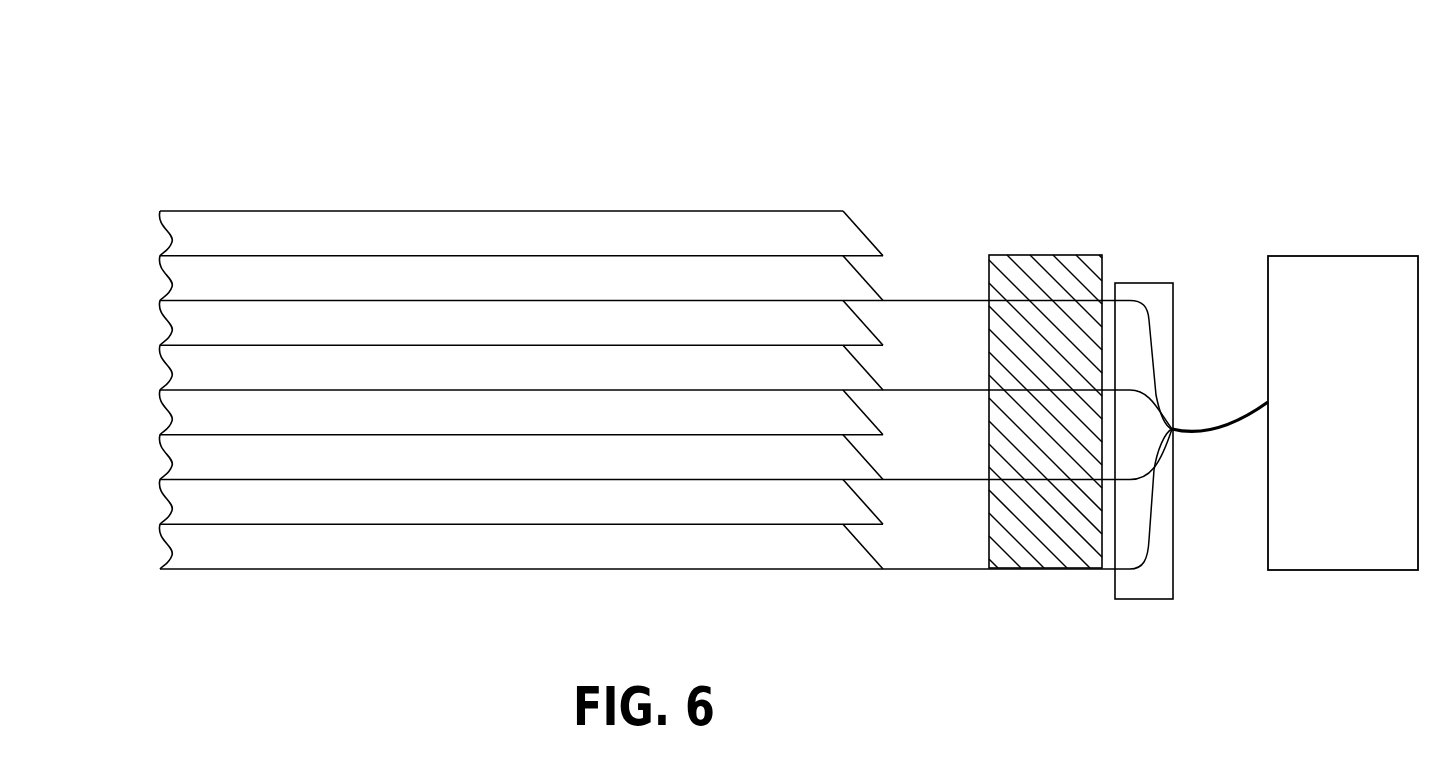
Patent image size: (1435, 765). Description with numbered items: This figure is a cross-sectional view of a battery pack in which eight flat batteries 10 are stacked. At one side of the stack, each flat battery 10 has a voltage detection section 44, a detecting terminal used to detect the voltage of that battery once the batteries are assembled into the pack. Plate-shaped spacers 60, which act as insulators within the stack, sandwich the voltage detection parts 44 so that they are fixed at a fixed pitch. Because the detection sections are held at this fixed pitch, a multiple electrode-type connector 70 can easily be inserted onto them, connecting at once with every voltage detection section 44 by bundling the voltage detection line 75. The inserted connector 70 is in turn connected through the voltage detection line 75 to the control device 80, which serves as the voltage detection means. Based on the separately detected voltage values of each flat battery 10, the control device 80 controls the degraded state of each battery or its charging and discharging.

The flat battery 10 is at (661, 121).
The voltage detection section 44 is at (898, 388).
The spacer 60 is at (1057, 342).
The multiple electrode-type connector 70 is at (1145, 290).
The voltage detection line 75 is at (1204, 428).
The control device 80 is at (1331, 278).